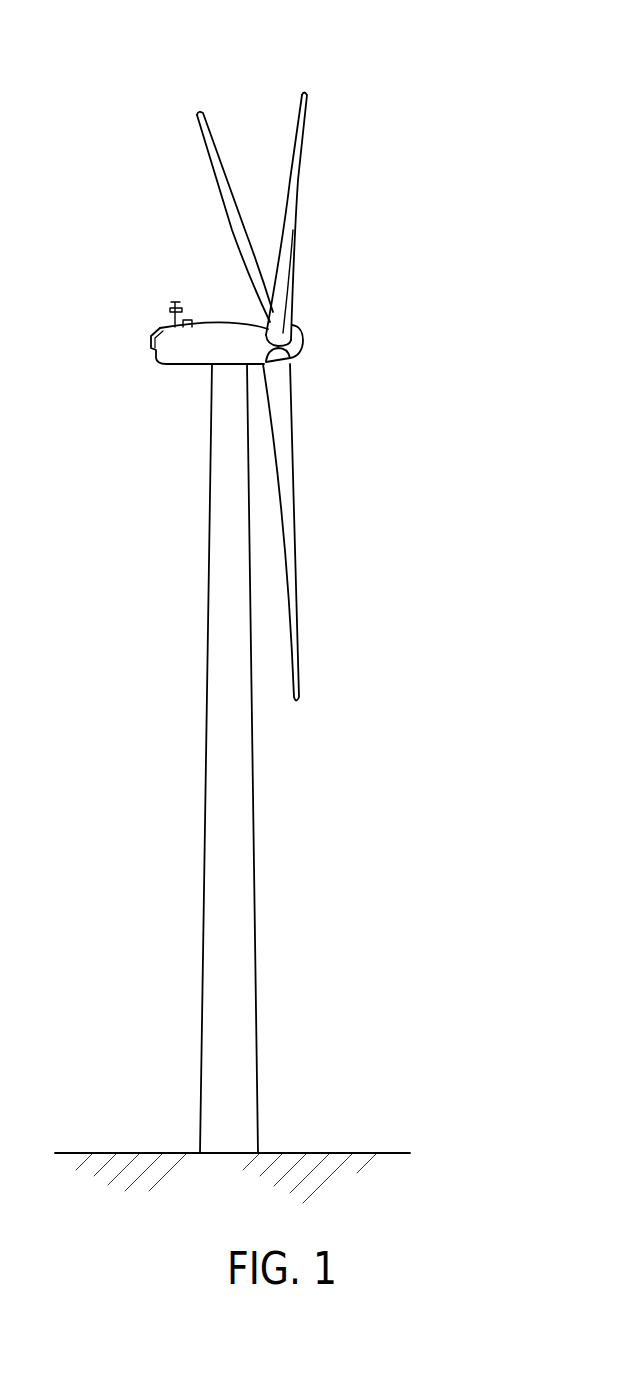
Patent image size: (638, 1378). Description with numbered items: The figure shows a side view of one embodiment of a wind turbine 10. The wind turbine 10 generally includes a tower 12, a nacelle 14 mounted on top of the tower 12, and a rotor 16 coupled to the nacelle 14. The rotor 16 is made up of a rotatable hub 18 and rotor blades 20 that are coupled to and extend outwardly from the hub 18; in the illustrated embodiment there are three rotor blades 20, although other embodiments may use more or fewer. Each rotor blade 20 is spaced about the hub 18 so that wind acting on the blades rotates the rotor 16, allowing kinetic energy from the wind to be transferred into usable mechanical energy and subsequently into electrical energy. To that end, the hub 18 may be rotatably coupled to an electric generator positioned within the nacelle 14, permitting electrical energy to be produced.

The wind turbine 10 is at (347, 52).
The tower 12 is at (213, 856).
The nacelle 14 is at (188, 367).
The rotor 16 is at (304, 318).
The rotatable hub 18 is at (303, 345).
The rotor blade 20 is at (300, 101).